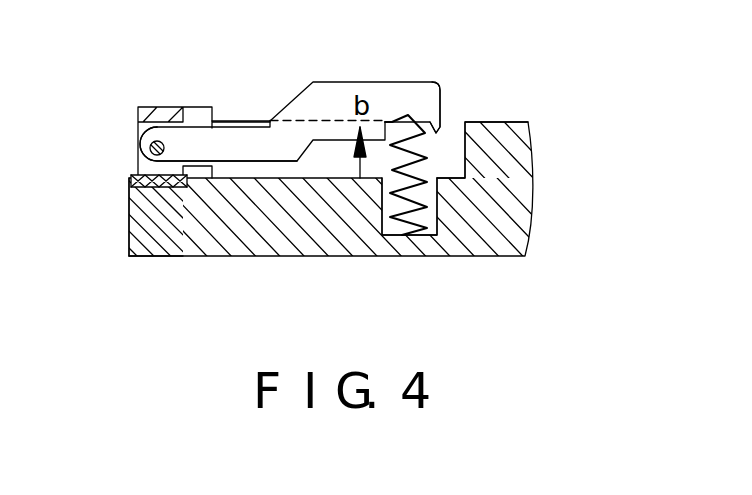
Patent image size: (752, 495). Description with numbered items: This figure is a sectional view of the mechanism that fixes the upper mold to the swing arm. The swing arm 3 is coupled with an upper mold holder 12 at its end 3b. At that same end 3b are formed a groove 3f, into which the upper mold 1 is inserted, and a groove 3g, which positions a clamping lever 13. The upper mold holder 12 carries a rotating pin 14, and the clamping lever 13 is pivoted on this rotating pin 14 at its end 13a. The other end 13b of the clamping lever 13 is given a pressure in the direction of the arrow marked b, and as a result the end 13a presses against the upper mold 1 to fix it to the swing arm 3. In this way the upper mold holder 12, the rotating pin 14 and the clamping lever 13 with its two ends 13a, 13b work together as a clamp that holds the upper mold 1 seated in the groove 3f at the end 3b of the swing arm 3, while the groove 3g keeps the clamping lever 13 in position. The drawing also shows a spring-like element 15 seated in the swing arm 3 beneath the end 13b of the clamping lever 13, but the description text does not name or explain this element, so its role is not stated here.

The upper mold 1 is at (177, 188).
The swing arm 3 is at (458, 250).
The end of the swing arm 3b is at (380, 278).
The groove for inserting the upper mold 3f is at (140, 178).
The groove for positioning the clamping lever 3g is at (456, 125).
The upper mold holder 12 is at (196, 107).
The clamping lever 13 is at (342, 86).
The end of the clamping lever 13a is at (140, 148).
The other end of the clamping lever 13b is at (420, 82).
The rotating pin 14 is at (148, 141).
The spring 15 is at (412, 195).